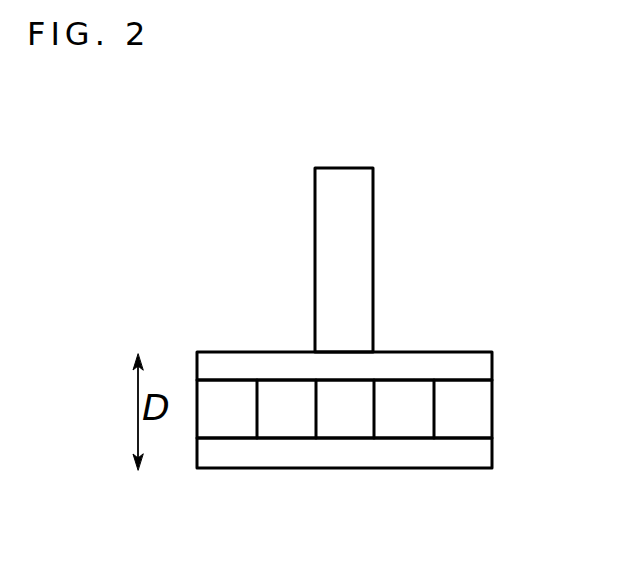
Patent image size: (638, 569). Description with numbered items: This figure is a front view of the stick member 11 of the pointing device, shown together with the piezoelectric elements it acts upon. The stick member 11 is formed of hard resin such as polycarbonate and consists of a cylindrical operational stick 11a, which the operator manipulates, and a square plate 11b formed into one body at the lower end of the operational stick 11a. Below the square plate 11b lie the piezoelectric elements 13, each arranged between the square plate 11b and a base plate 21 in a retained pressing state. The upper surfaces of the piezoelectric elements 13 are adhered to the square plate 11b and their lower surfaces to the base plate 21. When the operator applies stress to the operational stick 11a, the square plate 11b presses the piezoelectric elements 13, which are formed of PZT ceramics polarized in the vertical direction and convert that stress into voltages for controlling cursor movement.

The stick member 11 is at (349, 259).
The operational stick 11a is at (360, 267).
The square plate 11b is at (410, 365).
The piezoelectric elements 13 is at (220, 405).
The base plate 21 is at (438, 453).